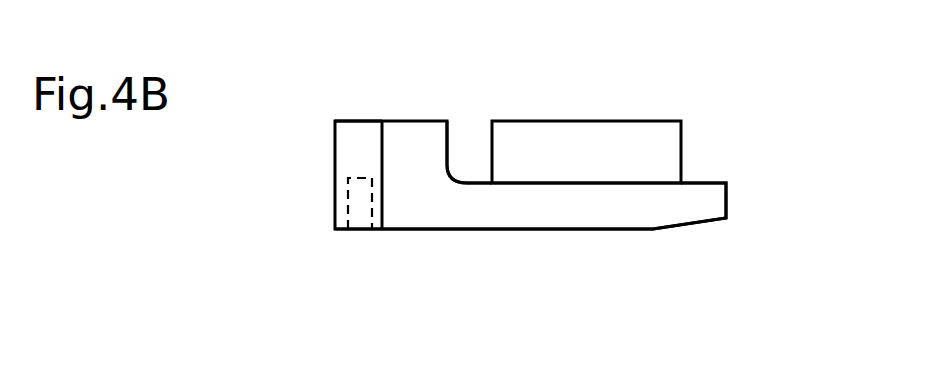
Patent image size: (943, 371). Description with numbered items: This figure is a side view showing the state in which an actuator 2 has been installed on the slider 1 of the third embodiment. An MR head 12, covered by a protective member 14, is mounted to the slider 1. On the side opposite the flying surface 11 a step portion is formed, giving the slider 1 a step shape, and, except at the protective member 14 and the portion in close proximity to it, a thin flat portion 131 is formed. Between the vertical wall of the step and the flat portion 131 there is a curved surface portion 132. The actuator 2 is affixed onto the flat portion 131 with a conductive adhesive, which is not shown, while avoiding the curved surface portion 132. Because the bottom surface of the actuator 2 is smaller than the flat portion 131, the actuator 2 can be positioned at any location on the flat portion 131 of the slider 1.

The slider 1 is at (568, 208).
The flying surface 11 is at (448, 230).
The MR head 12 is at (353, 200).
The protective member 14 is at (355, 143).
The flat portion 131 is at (698, 183).
The curved surface portion 132 is at (455, 173).
The actuator 2 is at (605, 133).